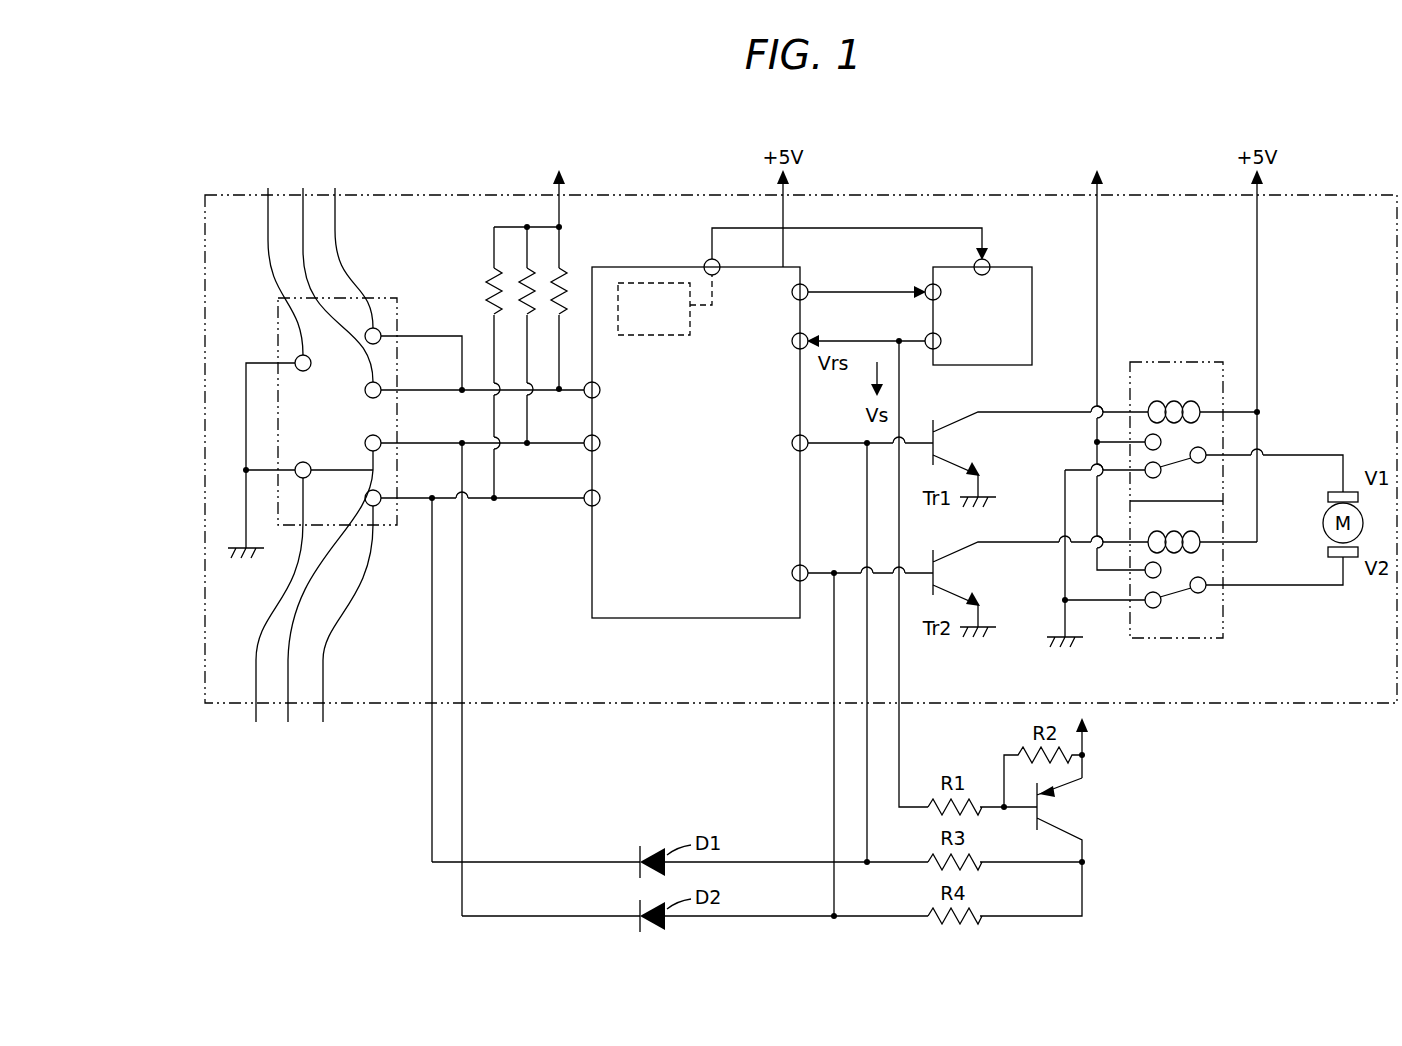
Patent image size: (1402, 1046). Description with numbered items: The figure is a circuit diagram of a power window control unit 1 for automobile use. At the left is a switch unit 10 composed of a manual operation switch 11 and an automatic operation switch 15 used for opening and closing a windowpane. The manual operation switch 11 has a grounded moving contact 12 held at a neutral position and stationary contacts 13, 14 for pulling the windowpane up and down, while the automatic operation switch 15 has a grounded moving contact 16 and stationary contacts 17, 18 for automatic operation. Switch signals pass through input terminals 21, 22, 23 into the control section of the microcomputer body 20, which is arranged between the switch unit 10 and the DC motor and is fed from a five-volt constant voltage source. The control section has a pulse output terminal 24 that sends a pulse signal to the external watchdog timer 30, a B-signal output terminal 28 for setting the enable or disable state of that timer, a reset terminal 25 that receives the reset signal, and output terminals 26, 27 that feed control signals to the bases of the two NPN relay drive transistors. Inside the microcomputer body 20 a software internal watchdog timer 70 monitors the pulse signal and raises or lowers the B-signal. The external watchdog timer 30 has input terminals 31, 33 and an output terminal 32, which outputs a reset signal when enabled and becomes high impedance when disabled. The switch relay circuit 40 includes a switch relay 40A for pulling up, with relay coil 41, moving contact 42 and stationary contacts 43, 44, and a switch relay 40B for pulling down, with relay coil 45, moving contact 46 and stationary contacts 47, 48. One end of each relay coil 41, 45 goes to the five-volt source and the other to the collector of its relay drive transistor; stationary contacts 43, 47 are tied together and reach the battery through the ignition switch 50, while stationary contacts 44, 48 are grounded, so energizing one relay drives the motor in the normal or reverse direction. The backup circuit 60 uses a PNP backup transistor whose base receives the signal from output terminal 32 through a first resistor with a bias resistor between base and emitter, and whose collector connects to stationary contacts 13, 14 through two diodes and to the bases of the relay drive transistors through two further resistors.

The power window control unit 1 is at (1340, 190).
The switch unit 10 is at (388, 295).
The manual operation switch 11 is at (343, 751).
The moving contact 12 is at (274, 614).
The stationary contact 13 is at (326, 610).
The stationary contact 14 is at (343, 628).
The automatic operation switch 15 is at (257, 157).
The moving contact 16 is at (279, 258).
The stationary contact 17 is at (349, 245).
The stationary contact 18 is at (332, 272).
The microcomputer body 20 is at (637, 265).
The input terminal 21 is at (600, 390).
The input terminal 22 is at (600, 443).
The input terminal 23 is at (600, 498).
The pulse output terminal 24 is at (792, 292).
The reset terminal 25 is at (792, 341).
The output terminal 26 is at (792, 443).
The output terminal 27 is at (792, 573).
The B-signal output terminal 28 is at (705, 262).
The external watchdog timer 30 is at (1030, 264).
The input terminal 31 is at (926, 286).
The output terminal 32 is at (925, 337).
The input terminal 33 is at (988, 260).
The switch relay circuit 40 is at (1208, 352).
The switch relay for pulling up 40A is at (1152, 362).
The switch relay for pulling down 40B is at (1178, 642).
The relay coil 41 is at (1173, 402).
The moving contact 42 is at (1205, 460).
The stationary contact 43 is at (1161, 440).
The stationary contact 44 is at (1161, 474).
The relay coil 45 is at (1205, 536).
The moving contact 46 is at (1205, 590).
The stationary contact 47 is at (1161, 568).
The stationary contact 48 is at (1161, 604).
The ignition switch 50 is at (1112, 136).
The backup circuit 60 is at (1092, 806).
The internal watchdog timer 70 is at (690, 318).